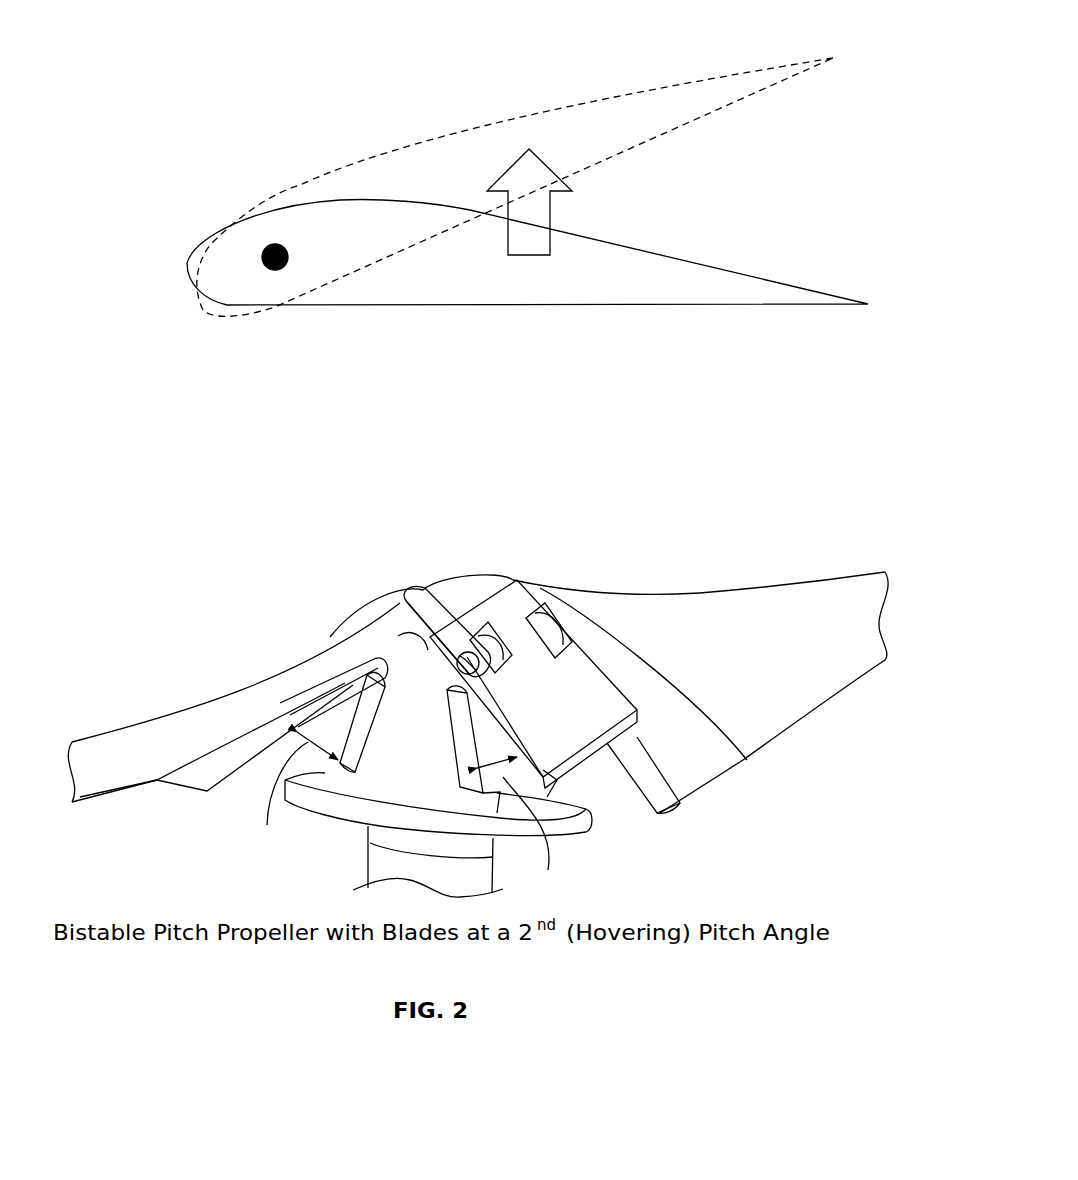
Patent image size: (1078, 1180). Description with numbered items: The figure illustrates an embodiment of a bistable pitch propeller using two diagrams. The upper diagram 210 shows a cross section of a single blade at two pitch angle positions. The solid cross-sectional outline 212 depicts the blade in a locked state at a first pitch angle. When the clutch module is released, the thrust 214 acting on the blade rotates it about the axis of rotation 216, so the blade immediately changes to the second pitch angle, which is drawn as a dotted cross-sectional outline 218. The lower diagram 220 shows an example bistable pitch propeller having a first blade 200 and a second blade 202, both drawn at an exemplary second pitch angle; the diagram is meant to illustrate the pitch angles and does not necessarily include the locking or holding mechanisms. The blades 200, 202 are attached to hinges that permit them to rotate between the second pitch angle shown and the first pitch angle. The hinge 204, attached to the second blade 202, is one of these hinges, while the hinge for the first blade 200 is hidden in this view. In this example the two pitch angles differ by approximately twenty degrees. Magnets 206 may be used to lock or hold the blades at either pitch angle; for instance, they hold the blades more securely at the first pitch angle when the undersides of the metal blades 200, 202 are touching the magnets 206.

The first blade 200 is at (177, 717).
The second blade 202 is at (693, 593).
The hinge 204 is at (459, 656).
The magnets 206 is at (393, 660).
The diagram 210 is at (681, 40).
The solid cross-sectional outline 212 is at (186, 263).
The thrust 214 is at (528, 256).
The axis of rotation 216 is at (275, 270).
The dotted cross-sectional outline 218 is at (358, 157).
The diagram 220 is at (818, 491).